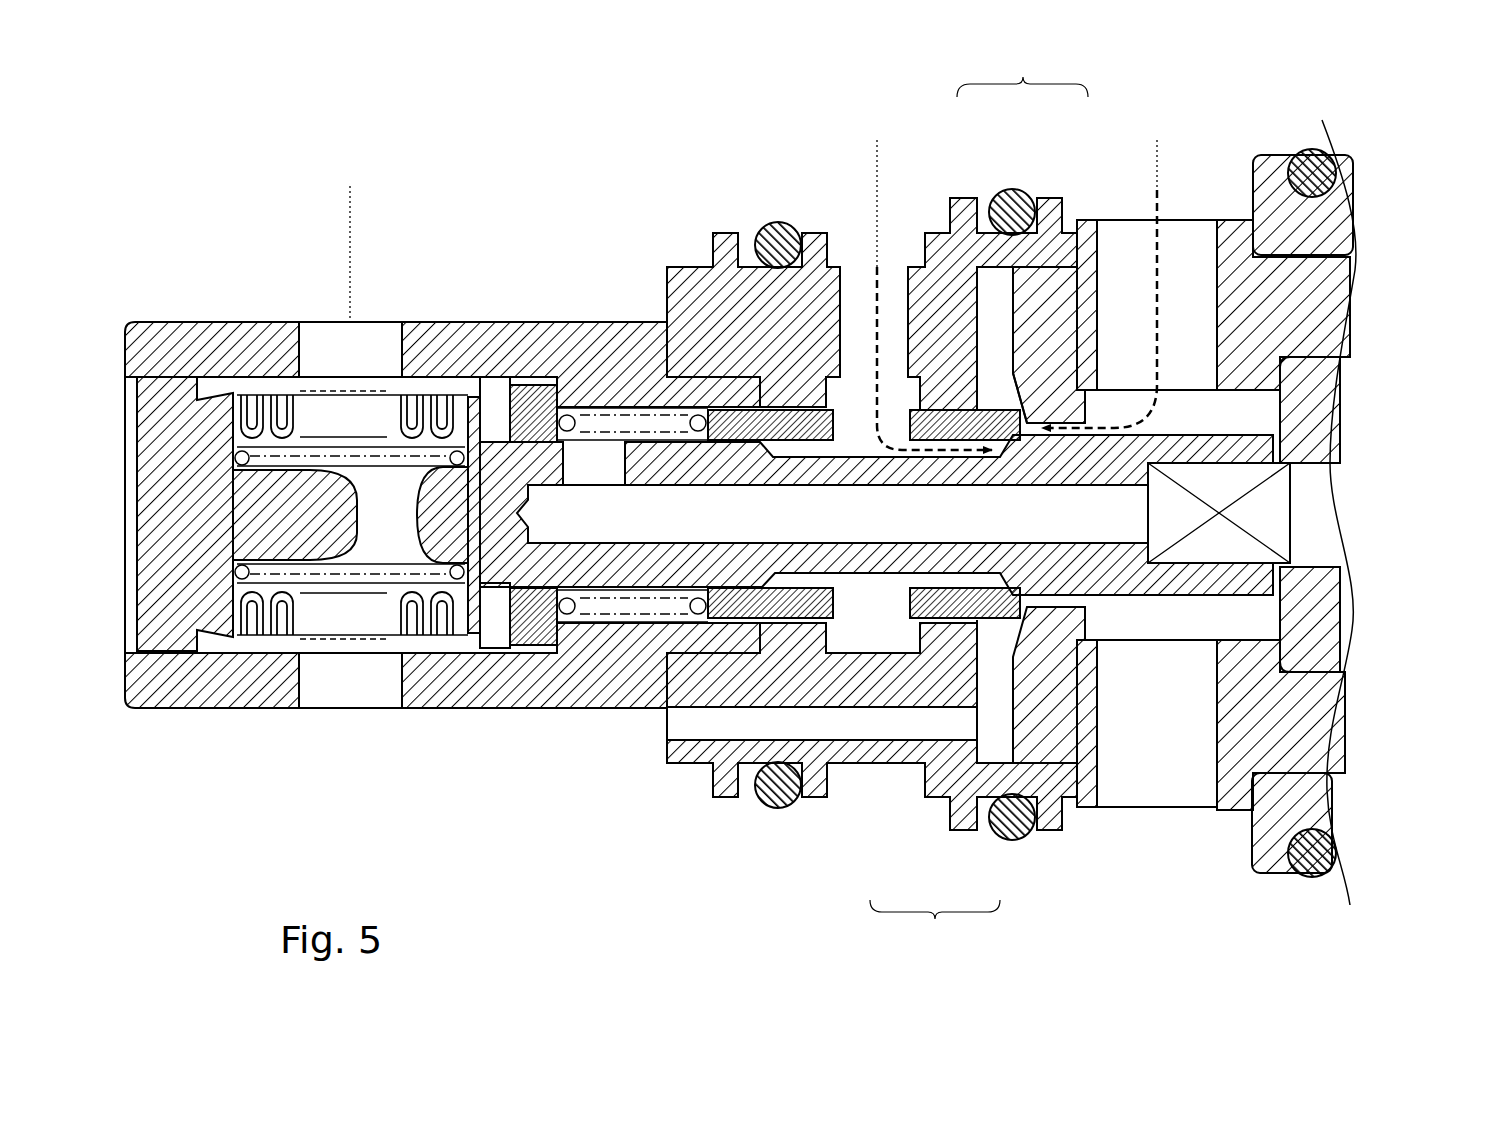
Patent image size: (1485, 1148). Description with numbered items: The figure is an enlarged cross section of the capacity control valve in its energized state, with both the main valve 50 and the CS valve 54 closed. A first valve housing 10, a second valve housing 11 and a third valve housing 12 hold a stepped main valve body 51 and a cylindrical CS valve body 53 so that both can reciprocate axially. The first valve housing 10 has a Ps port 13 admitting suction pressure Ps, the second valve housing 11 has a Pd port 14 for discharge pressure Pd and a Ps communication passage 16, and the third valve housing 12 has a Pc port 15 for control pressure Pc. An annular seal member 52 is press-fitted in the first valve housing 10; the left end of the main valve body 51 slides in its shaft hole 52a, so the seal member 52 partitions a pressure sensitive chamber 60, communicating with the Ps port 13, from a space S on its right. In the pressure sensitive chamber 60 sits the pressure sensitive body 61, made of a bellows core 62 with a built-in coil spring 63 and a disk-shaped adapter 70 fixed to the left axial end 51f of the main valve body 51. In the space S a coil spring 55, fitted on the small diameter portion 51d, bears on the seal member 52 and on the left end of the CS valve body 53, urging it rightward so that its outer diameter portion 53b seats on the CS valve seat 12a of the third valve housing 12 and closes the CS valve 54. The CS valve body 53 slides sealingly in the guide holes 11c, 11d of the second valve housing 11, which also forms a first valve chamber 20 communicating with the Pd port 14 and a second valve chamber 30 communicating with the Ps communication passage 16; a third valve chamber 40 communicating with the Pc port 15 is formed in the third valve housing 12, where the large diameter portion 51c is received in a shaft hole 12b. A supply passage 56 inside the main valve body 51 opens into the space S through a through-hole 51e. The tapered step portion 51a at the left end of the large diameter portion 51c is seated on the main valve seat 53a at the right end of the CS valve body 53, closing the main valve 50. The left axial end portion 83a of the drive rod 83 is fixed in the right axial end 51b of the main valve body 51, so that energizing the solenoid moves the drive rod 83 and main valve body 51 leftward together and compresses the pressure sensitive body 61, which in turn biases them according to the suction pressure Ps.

The first valve housing 10 is at (178, 314).
The second valve housing 11 is at (867, 768).
The guide hole 11c is at (766, 226).
The guide hole 11d is at (936, 405).
The third valve housing 12 is at (1227, 815).
The CS valve seat 12a is at (1012, 412).
The shaft hole 12b is at (1068, 640).
The Ps port 13 is at (306, 322).
The Pd port 14 is at (860, 292).
The Pc port 15 is at (1102, 295).
The Ps communication passage 16 is at (837, 730).
The first valve chamber 20 is at (893, 388).
The second valve chamber 30 is at (1035, 702).
The third valve chamber 40 is at (1190, 405).
The main valve 50 is at (935, 921).
The main valve body 51 is at (1137, 600).
The step portion 51a is at (995, 582).
The right axial end 51b is at (1266, 255).
The large diameter portion 51c is at (1165, 572).
The small diameter portion 51d is at (770, 808).
The through-hole 51e is at (612, 466).
The left axial end 51f is at (518, 590).
The seal member 52 is at (530, 381).
The shaft hole 52a is at (476, 395).
The CS valve body 53 is at (718, 606).
The main valve seat 53a is at (965, 606).
The outer diameter portion 53b is at (1030, 416).
The CS valve 54 is at (1022, 68).
The coil spring 55 is at (572, 412).
The supply passage 56 is at (617, 525).
The pressure sensitive chamber 60 is at (240, 394).
The pressure sensitive body 61 is at (245, 650).
The bellows core 62 is at (285, 600).
The coil spring 63 is at (437, 580).
The adapter 70 is at (467, 614).
The drive rod 83 is at (1330, 577).
The left axial end portion 83a is at (1262, 517).
The suction pressure Ps is at (350, 238).
The discharge pressure Pd is at (926, 280).
The control pressure Pc is at (1107, 269).
The space S is at (600, 424).